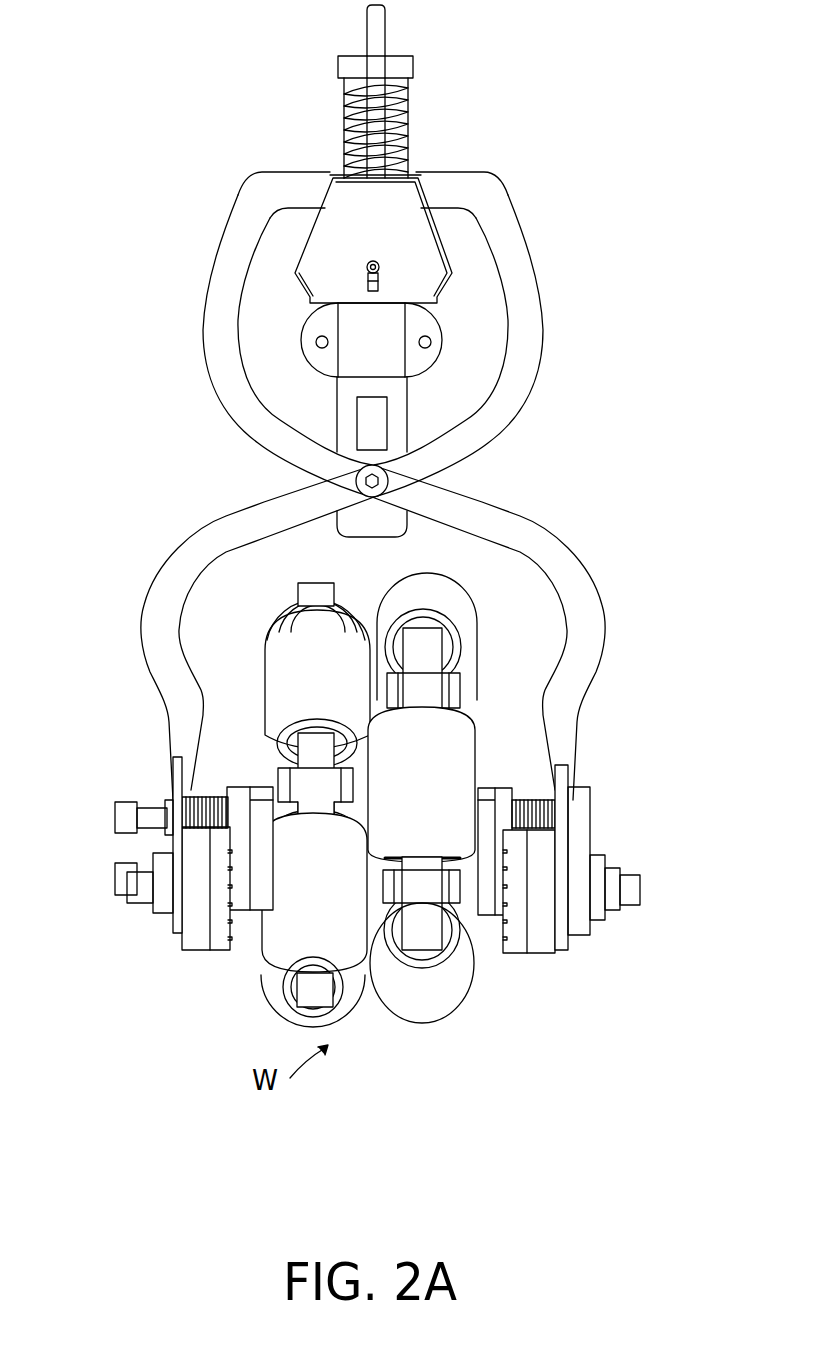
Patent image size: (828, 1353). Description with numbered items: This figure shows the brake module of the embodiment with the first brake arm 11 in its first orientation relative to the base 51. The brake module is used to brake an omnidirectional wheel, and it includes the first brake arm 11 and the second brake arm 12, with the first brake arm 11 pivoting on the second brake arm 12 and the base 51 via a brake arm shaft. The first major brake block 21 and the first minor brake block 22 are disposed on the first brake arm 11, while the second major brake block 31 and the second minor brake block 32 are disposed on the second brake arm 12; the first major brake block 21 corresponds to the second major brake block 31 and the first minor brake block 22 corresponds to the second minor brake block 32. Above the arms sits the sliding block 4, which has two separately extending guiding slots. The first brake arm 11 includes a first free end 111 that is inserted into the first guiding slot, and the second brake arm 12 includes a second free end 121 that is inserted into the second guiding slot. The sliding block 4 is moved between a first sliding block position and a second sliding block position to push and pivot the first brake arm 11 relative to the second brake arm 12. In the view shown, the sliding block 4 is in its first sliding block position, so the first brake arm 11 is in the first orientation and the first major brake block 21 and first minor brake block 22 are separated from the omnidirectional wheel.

The sliding block 4 is at (413, 213).
The first brake arm 11 is at (215, 296).
The first free end 111 is at (270, 192).
The second brake arm 12 is at (533, 290).
The second free end 121 is at (478, 186).
The base 51 is at (390, 351).
The first major brake block 21 is at (497, 800).
The first minor brake block 22 is at (528, 950).
The second major brake block 31 is at (247, 800).
The second minor brake block 32 is at (221, 945).